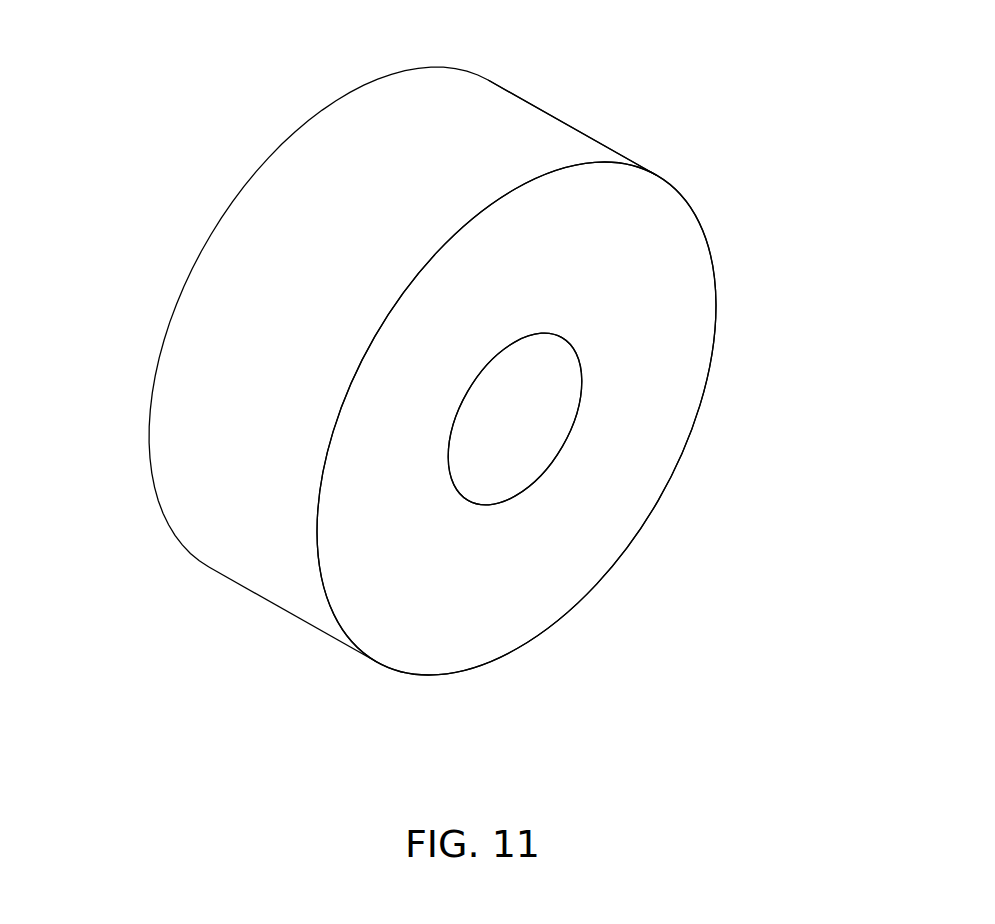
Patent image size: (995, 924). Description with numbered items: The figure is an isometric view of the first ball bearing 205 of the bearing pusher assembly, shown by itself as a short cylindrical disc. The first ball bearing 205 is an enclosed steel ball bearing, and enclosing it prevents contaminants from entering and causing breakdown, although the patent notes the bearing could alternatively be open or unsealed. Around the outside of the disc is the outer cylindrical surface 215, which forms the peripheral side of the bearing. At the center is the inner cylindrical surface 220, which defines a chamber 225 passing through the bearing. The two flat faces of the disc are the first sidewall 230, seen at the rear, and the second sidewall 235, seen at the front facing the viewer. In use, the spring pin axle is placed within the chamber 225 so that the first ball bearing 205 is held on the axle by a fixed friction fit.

The first ball bearing 205 is at (130, 549).
The outer cylindrical surface 215 is at (523, 117).
The inner cylindrical surface 220 is at (548, 372).
The chamber 225 is at (517, 423).
The first sidewall 230 is at (301, 128).
The second sidewall 235 is at (670, 253).